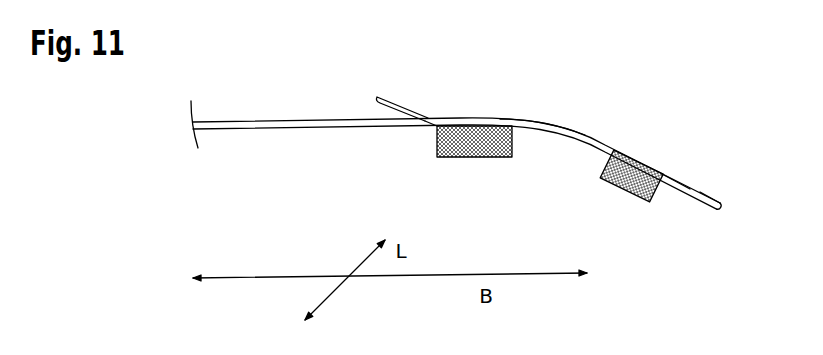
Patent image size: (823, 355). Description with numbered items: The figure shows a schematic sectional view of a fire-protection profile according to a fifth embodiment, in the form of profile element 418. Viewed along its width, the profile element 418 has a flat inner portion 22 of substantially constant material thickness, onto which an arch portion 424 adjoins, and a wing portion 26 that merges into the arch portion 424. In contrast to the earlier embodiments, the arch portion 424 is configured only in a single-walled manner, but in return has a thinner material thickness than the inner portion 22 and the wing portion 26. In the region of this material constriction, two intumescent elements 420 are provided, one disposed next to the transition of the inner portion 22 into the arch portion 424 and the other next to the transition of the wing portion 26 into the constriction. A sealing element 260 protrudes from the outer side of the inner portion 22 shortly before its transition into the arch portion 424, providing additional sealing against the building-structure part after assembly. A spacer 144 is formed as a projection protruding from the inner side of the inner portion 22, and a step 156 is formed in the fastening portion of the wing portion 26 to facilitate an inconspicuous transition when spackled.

The profile element 418 is at (224, 179).
The inner portion 22 is at (268, 121).
The arch portion 424 is at (563, 125).
The sealing element 260 is at (378, 97).
The spacer 144 is at (428, 128).
The intumescent element 420 is at (460, 137).
The step 156 is at (670, 173).
The wing portion 26 is at (705, 195).